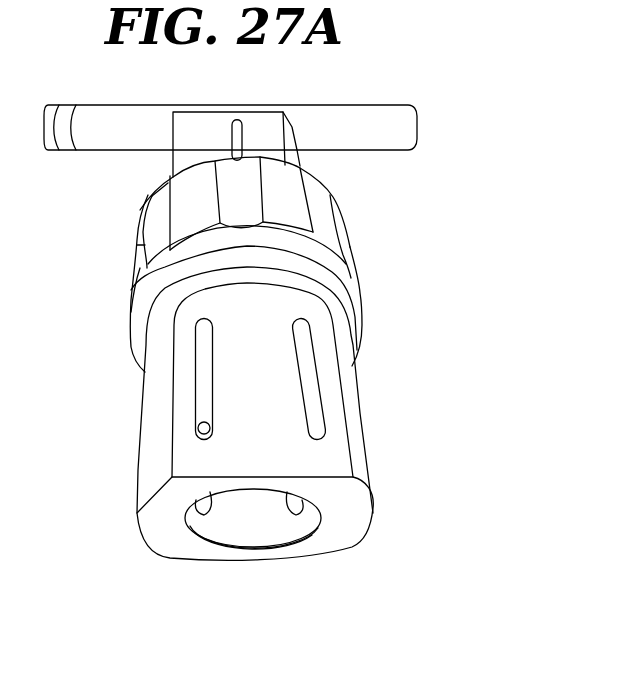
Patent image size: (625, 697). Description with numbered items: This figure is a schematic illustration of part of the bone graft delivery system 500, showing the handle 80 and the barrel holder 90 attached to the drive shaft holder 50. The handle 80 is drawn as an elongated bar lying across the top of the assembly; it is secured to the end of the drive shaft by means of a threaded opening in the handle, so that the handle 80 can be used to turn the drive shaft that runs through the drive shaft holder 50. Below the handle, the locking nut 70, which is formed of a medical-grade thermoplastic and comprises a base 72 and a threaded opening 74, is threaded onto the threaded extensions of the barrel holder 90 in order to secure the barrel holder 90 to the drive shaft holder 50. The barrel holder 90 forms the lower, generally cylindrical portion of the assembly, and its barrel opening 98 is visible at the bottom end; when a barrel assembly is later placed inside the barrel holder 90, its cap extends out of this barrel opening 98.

The bone graft delivery system 500 is at (452, 285).
The handle 80 is at (420, 127).
The drive shaft holder 50 is at (173, 157).
The locking nut 70 is at (142, 245).
The base 72 is at (350, 246).
The threaded opening 74 is at (325, 289).
The barrel holder 90 is at (378, 405).
The barrel opening 98 is at (320, 532).